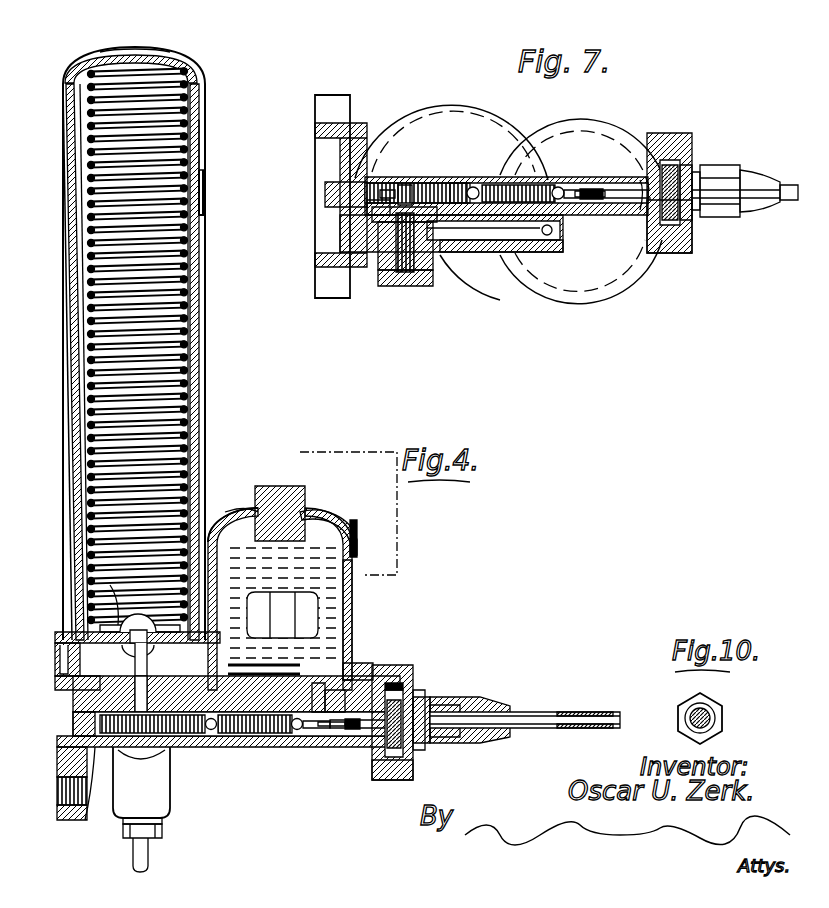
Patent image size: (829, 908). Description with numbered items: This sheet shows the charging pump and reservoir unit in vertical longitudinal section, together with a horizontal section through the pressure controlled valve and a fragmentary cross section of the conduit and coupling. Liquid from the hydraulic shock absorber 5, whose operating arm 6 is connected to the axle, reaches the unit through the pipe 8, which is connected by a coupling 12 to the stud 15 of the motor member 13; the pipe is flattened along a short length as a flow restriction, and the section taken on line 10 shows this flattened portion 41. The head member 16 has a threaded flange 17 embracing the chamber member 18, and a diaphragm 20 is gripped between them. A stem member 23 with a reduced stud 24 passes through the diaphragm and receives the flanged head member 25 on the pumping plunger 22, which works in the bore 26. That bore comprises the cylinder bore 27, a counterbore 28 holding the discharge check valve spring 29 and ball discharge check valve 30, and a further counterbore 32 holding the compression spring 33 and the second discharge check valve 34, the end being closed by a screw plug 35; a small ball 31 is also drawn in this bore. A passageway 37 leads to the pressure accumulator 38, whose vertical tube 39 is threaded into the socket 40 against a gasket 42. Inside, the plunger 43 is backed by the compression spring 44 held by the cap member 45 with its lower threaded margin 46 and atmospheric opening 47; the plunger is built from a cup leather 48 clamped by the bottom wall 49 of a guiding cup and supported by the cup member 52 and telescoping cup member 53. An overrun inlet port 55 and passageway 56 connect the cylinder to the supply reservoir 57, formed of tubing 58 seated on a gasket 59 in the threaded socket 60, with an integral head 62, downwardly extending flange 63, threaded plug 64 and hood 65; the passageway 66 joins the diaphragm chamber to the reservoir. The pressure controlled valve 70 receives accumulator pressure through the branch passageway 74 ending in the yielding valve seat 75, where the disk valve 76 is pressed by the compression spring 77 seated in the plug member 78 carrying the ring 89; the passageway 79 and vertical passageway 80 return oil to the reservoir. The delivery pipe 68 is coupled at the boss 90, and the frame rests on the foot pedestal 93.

In FIG. 4, the shock absorber 5 is at (118, 17).
In FIG. 4, the operating arm 6 is at (275, 445).
In FIG. 4, the pipe 8 is at (532, 729).
In FIG. 7, the pipe 8 is at (792, 202).
In FIG. 10, the pipe 8 is at (705, 710).
In FIG. 4, the section line 10- 10 is at (568, 746).
In FIG. 4, the coupling 12 is at (462, 743).
In FIG. 7, the coupling 12 is at (740, 218).
In FIG. 10, the coupling 12 is at (727, 713).
In FIG. 4, the motor member 13 is at (400, 665).
In FIG. 7, the motor member 13 is at (685, 128).
In FIG. 4, the stud 15 is at (450, 698).
In FIG. 4, the head member 16 is at (413, 777).
In FIG. 7, the head member 16 is at (692, 172).
In FIG. 4, the threaded flange 17 is at (380, 782).
In FIG. 7, the threaded flange 17 is at (665, 132).
In FIG. 4, the chamber member 18 is at (387, 760).
In FIG. 4, the diaphragm 20 is at (420, 695).
In FIG. 7, the diaphragm 20 is at (692, 225).
In FIG. 4, the pumping plunger 22 is at (335, 737).
In FIG. 4, the stem member 23 is at (392, 683).
In FIG. 7, the stem member 23 is at (700, 182).
In FIG. 7, the reduced stud 24 is at (720, 176).
In FIG. 7, the flanged head member 25 is at (640, 178).
In FIG. 4, the bore 26 is at (188, 737).
In FIG. 4, the cylinder bore 27 is at (352, 740).
In FIG. 7, the cylinder bore 27 is at (600, 188).
In FIG. 4, the counterbore 28 is at (228, 737).
In FIG. 7, the counterbore 28 is at (512, 182).
In FIG. 4, the discharge check valve spring 29 is at (292, 737).
In FIG. 7, the discharge check valve spring 29 is at (556, 186).
In FIG. 4, the ball discharge check valve 30 is at (305, 737).
In FIG. 7, the ball discharge check valve 30 is at (566, 188).
In FIG. 4, the ball 31 is at (213, 737).
In FIG. 4, the counterbore 32 is at (95, 800).
In FIG. 7, the counterbore 32 is at (430, 180).
In FIG. 4, the compression spring 33 is at (150, 747).
In FIG. 7, the compression spring 33 is at (480, 180).
In FIG. 7, the second discharge check valve 34 is at (475, 186).
In FIG. 4, the screw plug 35 is at (75, 724).
In FIG. 7, the screw plug 35 is at (325, 190).
In FIG. 4, the passageway 37 is at (138, 680).
In FIG. 7, the passageway 37 is at (405, 180).
In FIG. 4, the pressure accumulator 38 is at (65, 492).
In FIG. 4, the vertical tube 39 is at (200, 380).
In FIG. 4, the socket 40 is at (55, 636).
In FIG. 10, the conduit core 41 is at (718, 713).
In FIG. 4, the gasket 42 is at (75, 700).
In FIG. 4, the plunger 43 is at (100, 628).
In FIG. 4, the compression spring 44 is at (160, 360).
In FIG. 4, the cap member 45 is at (205, 125).
In FIG. 4, the lower threaded margin 46 is at (205, 208).
In FIG. 4, the atmospheric opening 47 is at (135, 48).
In FIG. 4, the cup leather 48 is at (150, 645).
In FIG. 4, the bottom wall 49 is at (108, 590).
In FIG. 4, the cup member 52 is at (60, 663).
In FIG. 4, the telescoping cup member 53 is at (70, 684).
In FIG. 4, the overrun inlet port 55 is at (325, 745).
In FIG. 7, the overrun inlet port 55 is at (588, 190).
In FIG. 4, the passageway 56 is at (352, 662).
In FIG. 4, the supply reservoir 57 is at (245, 505).
In FIG. 4, the tubing 58 is at (345, 580).
In FIG. 4, the gasket 59 is at (320, 685).
In FIG. 4, the threaded socket 60 is at (232, 625).
In FIG. 4, the integral head 62 is at (322, 516).
In FIG. 4, the downwardly extending flange 63 is at (358, 535).
In FIG. 4, the threaded plug 64 is at (275, 500).
In FIG. 4, the hood 65 is at (222, 512).
In FIG. 4, the passageway 66 is at (335, 690).
In FIG. 4, the delivery pipe 68 is at (133, 850).
In FIG. 7, the pressure controlled valve 70 is at (440, 268).
In FIG. 7, the branch passageway 74 is at (393, 184).
In FIG. 7, the yielding valve seat 75 is at (370, 176).
In FIG. 7, the disk valve 76 is at (380, 212).
In FIG. 7, the compression spring 77 is at (402, 282).
In FIG. 7, the plug member 78 is at (385, 286).
In FIG. 7, the passageway 79 is at (512, 235).
In FIG. 7, the vertical passageway 80 is at (550, 240).
In FIG. 4, the ring 89 is at (165, 834).
In FIG. 7, the ring 89 is at (375, 222).
In FIG. 4, the boss 90 is at (165, 818).
In FIG. 4, the foot pedestal 93 is at (60, 772).